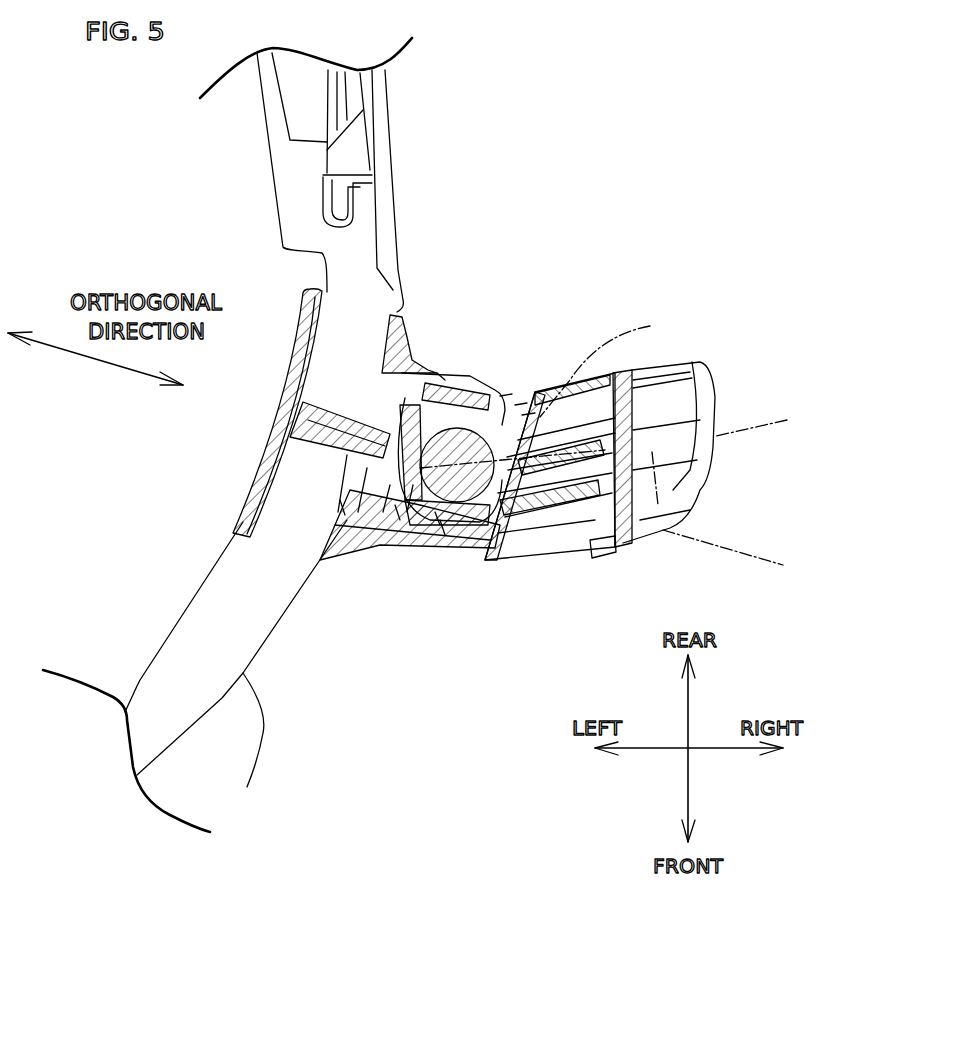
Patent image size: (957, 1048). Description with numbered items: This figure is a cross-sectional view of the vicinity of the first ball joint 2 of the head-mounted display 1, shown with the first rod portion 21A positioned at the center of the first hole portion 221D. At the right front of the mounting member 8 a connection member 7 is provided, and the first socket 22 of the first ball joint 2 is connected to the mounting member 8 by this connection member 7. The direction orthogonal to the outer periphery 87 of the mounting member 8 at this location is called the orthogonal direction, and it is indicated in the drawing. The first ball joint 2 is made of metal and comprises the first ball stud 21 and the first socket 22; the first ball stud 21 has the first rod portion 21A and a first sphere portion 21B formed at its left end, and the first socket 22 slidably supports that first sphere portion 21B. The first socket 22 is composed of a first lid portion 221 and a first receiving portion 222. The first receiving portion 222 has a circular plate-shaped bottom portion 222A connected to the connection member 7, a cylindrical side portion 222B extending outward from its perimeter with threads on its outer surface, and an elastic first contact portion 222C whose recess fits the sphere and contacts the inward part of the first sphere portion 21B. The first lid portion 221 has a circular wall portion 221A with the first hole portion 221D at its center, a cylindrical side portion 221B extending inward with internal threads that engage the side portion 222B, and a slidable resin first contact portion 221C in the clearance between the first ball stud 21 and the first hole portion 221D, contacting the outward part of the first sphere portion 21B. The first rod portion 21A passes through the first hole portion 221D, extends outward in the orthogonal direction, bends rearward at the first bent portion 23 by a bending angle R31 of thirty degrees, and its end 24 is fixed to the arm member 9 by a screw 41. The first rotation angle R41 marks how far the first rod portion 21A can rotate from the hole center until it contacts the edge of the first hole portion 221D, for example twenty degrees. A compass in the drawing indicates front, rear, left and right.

The head-mounted display 1 is at (459, 72).
The first ball joint 2 is at (492, 245).
The connection member 7 is at (240, 465).
The mounting member 8 is at (223, 717).
The outer periphery 87 is at (248, 744).
The arm member 9 is at (727, 383).
The first ball stud 21 is at (593, 553).
The first rod portion 21A is at (510, 533).
The first sphere portion 21B is at (443, 448).
The first socket 22 is at (460, 365).
The first bent portion 23 is at (550, 517).
The end 24 is at (703, 370).
The screw 41 is at (640, 458).
The first lid portion 221 is at (617, 230).
The wall portion 221A is at (520, 405).
The side portion 221B is at (490, 395).
The first contact portion 221C is at (525, 417).
The first hole portion 221D is at (443, 523).
The first receiving portion 222 is at (452, 672).
The bottom portion 222A is at (410, 518).
The side portion 222B is at (408, 518).
The first contact portion 222C is at (433, 520).
The bending angle R31 is at (676, 478).
The first rotation angle R41 is at (650, 326).